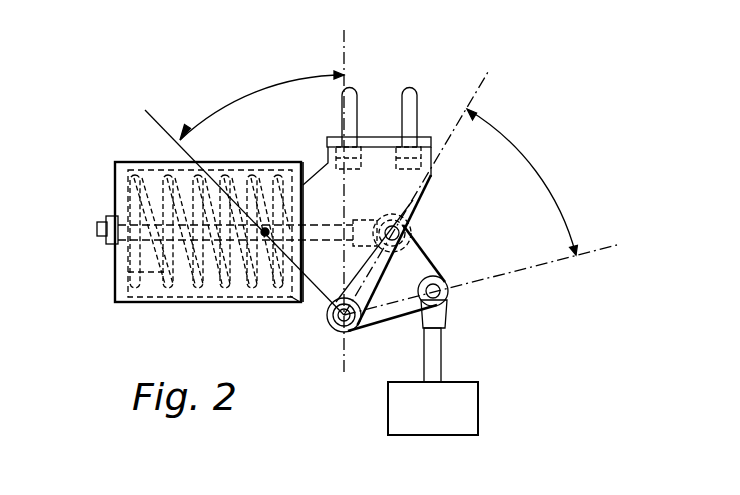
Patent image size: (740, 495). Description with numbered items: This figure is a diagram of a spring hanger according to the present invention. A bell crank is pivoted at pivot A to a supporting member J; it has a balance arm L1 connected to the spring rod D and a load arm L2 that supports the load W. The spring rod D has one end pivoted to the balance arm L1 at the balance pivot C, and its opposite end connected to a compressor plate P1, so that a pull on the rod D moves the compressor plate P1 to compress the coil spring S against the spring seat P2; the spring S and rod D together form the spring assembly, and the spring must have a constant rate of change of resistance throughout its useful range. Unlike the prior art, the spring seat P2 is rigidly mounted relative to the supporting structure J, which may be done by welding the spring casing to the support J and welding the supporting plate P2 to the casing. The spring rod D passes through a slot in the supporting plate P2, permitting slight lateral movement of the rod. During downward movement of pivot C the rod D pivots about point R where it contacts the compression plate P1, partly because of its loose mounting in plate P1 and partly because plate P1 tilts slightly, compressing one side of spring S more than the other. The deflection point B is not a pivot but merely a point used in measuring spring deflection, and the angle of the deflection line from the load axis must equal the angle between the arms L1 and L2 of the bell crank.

The coil spring S is at (165, 162).
The spring rod D is at (165, 300).
The point R is at (110, 242).
The compressor plate P1 is at (130, 273).
The spring seat P2 is at (296, 304).
The deflection point B is at (266, 292).
The pivot A is at (331, 326).
The balance pivot C is at (409, 235).
The supporting member J is at (427, 186).
The load W is at (433, 355).
The balance arm L1 is at (477, 91).
The load arm L2 is at (538, 264).